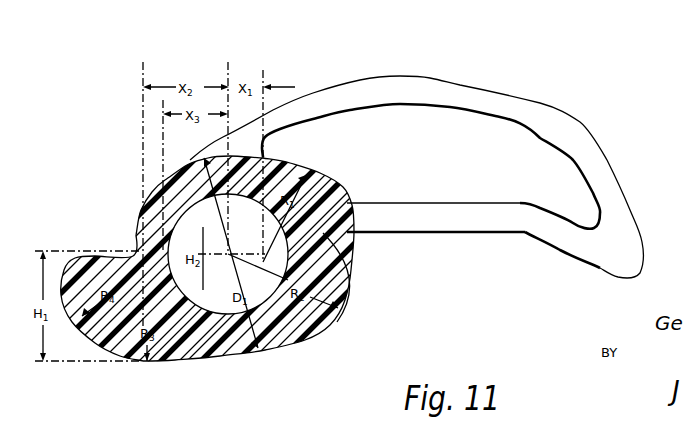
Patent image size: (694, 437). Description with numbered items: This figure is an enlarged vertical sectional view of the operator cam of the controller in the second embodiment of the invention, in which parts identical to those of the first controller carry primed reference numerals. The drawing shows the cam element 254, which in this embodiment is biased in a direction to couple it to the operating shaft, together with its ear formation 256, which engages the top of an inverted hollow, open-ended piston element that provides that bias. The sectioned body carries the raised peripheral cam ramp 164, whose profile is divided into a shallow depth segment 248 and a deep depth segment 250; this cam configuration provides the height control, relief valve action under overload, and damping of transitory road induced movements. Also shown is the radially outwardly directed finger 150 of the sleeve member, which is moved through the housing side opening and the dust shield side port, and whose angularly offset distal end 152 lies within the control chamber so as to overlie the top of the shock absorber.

The deep depth segment of the cam profile 250 is at (358, 256).
The shallow depth segment of the cam profile 248 is at (205, 160).
The ear formation 256 is at (88, 257).
The cam element 254 is at (462, 84).
The cam ramp 164 is at (340, 193).
The finger 150 is at (476, 197).
The angularly offset distal end 152 is at (620, 233).